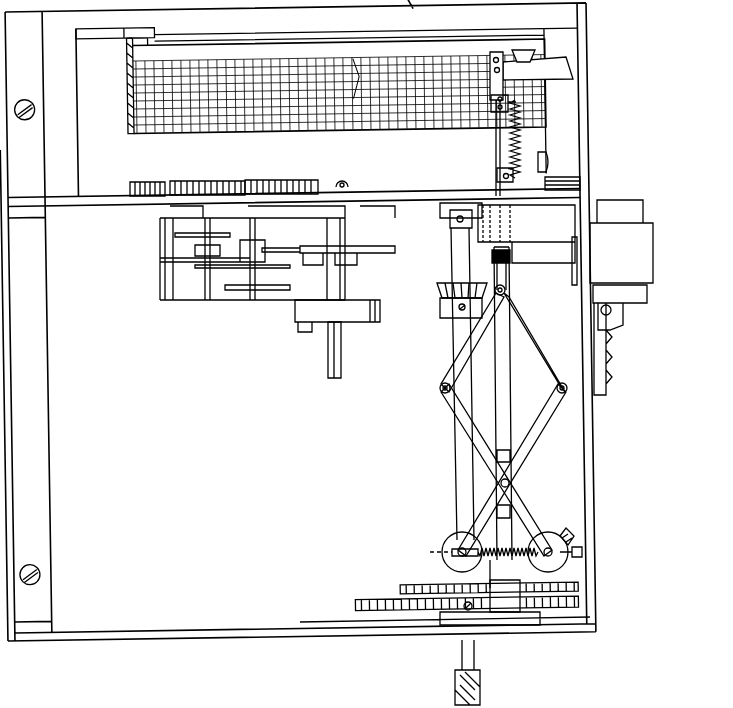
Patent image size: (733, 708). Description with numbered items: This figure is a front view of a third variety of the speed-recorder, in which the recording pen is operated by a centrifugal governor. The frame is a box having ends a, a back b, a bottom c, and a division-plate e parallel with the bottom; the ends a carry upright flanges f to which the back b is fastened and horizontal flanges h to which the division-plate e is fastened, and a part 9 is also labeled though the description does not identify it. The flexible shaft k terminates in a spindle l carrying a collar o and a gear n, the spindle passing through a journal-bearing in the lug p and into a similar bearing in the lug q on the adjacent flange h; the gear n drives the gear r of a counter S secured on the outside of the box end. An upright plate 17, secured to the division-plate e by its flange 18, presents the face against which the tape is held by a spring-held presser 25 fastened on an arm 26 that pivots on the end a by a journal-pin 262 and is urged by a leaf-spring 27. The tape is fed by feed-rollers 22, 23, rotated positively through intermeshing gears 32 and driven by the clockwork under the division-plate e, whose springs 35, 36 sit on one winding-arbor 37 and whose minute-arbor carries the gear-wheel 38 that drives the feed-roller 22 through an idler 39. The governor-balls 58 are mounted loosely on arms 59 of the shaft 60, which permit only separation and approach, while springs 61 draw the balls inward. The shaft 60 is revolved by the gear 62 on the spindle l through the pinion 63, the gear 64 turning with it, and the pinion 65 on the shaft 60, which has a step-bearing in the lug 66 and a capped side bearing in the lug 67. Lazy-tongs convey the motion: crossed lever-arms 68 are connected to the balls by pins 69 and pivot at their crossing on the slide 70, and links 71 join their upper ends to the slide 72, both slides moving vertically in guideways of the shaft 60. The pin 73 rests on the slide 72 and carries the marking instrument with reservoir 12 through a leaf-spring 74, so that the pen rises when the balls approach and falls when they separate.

The end a is at (590, 433).
The back b is at (225, 468).
The bottom c is at (150, 631).
The upright flange f is at (22, 70).
The horizontal flange h is at (30, 222).
The division-plate e is at (112, 210).
The gear n is at (568, 205).
The spindle l is at (452, 264).
The collar o is at (450, 226).
The lug q is at (440, 207).
The gear r is at (445, 286).
The lug p is at (458, 626).
The flexible shaft k is at (478, 672).
The counter S is at (621, 297).
The frame 9 is at (575, 622).
The marking instrument with reservoir 12 is at (531, 123).
The upright plate 17 is at (358, 144).
The flange 18 is at (413, 188).
The feed-roller 22 is at (162, 36).
The feed-roller 23 is at (125, 58).
The spring-held presser 25 is at (517, 135).
The arm 26 is at (561, 112).
The journal-pin 262 is at (548, 163).
The leaf-spring 27 is at (570, 178).
The gear 32 is at (142, 182).
The spring 35 is at (372, 246).
The spring 36 is at (360, 305).
The winding-arbor 37 is at (342, 368).
The gear-wheel 38 is at (296, 180).
The idler 39 is at (176, 181).
The governor-ball 58 is at (446, 546).
The arm 59 is at (430, 553).
The shaft 60 is at (502, 403).
The spring 61 is at (505, 574).
The gear 62 is at (355, 605).
The pinion 63 is at (465, 609).
The gear 64 is at (400, 589).
The pinion 65 is at (505, 596).
The lug 66 is at (525, 620).
The lug 67 is at (527, 245).
The crossed lever-arm 68 is at (470, 440).
The pin 69 is at (452, 559).
The slide 70 is at (498, 462).
The link 71 is at (460, 367).
The slide 72 is at (506, 285).
The pin 73 is at (508, 258).
The leaf-spring 74 is at (339, 86).